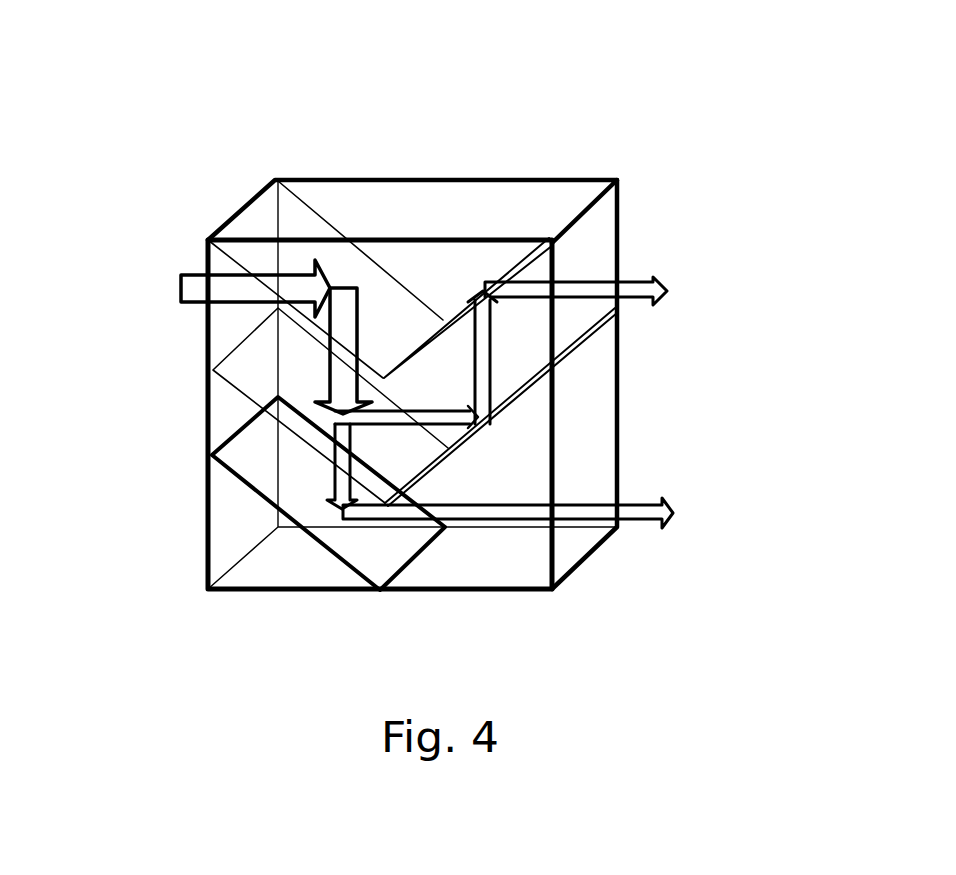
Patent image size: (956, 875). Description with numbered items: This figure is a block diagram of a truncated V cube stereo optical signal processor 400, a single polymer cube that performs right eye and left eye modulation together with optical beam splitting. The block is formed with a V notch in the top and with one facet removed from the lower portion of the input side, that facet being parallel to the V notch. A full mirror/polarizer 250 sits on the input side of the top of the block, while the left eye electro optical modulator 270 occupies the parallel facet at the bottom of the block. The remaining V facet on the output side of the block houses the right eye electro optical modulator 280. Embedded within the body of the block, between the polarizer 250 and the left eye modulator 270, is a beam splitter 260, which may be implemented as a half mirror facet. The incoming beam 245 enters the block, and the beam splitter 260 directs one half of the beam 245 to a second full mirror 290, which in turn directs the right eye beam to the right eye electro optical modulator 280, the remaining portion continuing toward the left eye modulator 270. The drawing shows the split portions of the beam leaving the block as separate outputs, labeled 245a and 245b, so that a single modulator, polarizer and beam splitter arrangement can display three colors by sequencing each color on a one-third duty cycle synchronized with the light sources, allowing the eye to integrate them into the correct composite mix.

The truncated V cube stereo optical signal processor 400 is at (535, 593).
The full mirror/polarizer 250 is at (307, 200).
The right eye electro optical modulator 280 is at (496, 268).
The second full mirror 290 is at (514, 404).
The beam splitter 260 is at (243, 342).
The left eye electro optical modulator 270 is at (328, 552).
The beam 245 is at (172, 286).
The first split beam 245a is at (357, 504).
The second split beam 245b is at (441, 407).